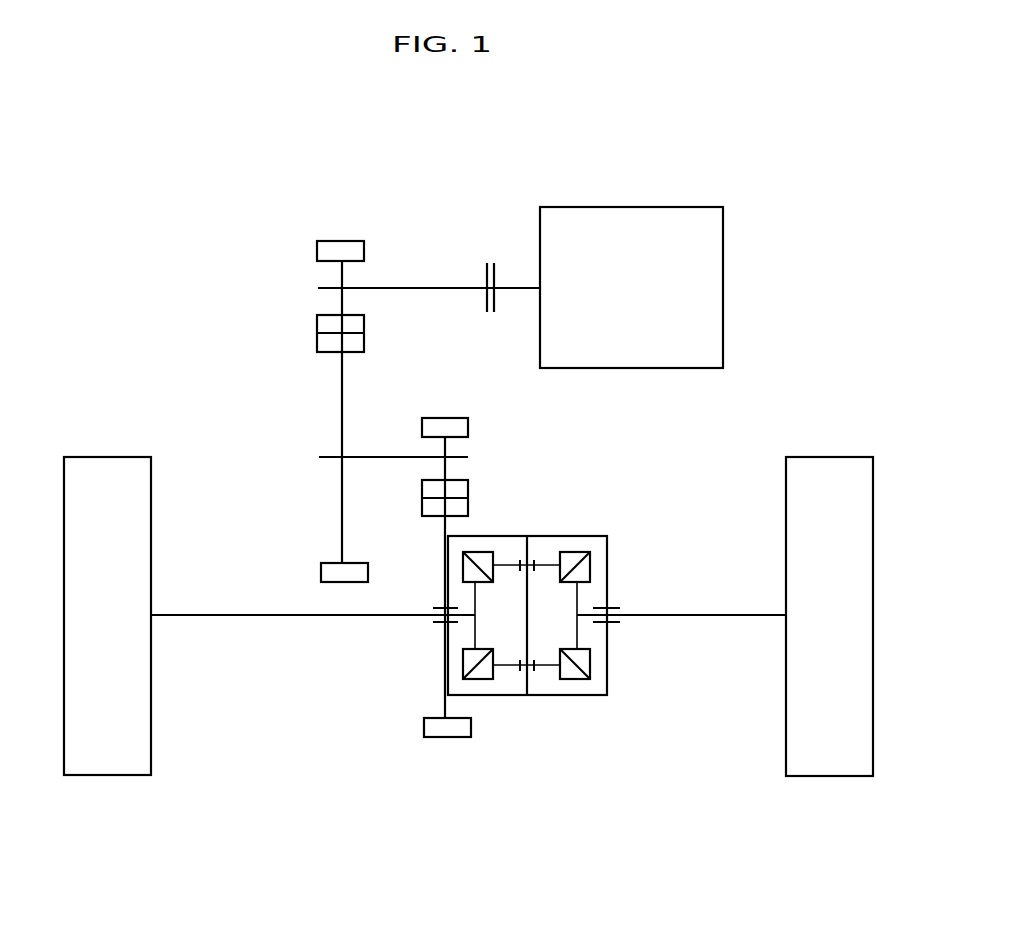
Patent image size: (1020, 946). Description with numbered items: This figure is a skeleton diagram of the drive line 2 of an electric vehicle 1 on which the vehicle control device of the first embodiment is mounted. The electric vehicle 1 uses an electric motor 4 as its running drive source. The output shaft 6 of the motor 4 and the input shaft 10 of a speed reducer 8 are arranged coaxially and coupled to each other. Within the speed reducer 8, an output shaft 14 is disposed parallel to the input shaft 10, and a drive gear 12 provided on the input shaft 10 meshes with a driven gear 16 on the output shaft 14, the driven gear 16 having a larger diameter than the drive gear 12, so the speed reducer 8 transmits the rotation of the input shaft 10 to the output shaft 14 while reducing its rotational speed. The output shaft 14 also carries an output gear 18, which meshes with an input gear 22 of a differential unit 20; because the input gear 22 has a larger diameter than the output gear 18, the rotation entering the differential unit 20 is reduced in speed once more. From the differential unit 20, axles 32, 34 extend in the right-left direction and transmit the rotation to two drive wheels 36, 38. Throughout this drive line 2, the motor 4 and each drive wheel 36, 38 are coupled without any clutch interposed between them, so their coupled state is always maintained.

The electric vehicle 1 is at (775, 189).
The drive line 2 is at (513, 189).
The electric motor 4 is at (632, 207).
The output shaft 6 is at (517, 287).
The speed reducer 8 is at (305, 312).
The input shaft 10 is at (420, 286).
The drive gear 12 is at (341, 241).
The output shaft 14 is at (378, 456).
The driven gear 16 is at (317, 342).
The output gear 18 is at (447, 418).
The differential unit 20 is at (600, 520).
The input gear 22 is at (470, 503).
The axle 32 is at (693, 614).
The axle 34 is at (226, 614).
The drive wheel 36 is at (832, 457).
The drive wheel 38 is at (110, 457).